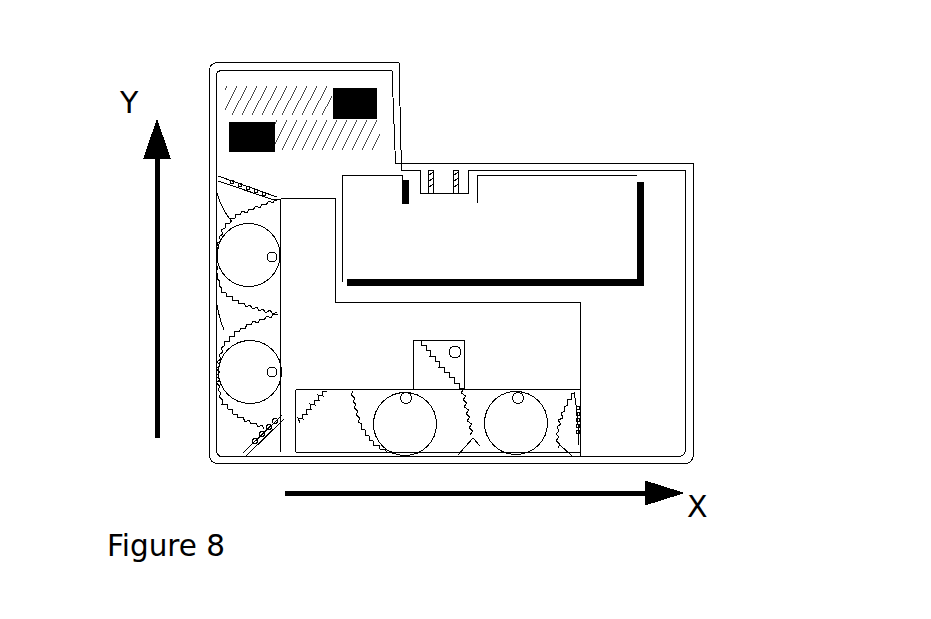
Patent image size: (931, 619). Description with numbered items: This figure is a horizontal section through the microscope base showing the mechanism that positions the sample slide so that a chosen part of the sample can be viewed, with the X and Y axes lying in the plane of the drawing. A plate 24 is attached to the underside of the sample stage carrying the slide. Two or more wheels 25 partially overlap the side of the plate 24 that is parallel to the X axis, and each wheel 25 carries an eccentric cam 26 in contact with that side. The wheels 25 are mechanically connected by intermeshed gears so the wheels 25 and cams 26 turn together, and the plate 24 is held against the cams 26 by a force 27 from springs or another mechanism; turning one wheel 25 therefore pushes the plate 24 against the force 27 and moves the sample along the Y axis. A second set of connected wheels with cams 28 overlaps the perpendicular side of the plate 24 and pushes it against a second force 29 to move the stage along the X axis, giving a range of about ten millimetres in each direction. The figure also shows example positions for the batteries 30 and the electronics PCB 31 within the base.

The plate 24 is at (431, 328).
The wheels 25 is at (463, 437).
The eccentric cam 26 is at (508, 453).
The force 27 is at (606, 417).
The wheels with cams 28 is at (228, 361).
The second force 29 is at (220, 181).
The batteries 30 is at (300, 108).
The electronics PCB 31 is at (493, 231).